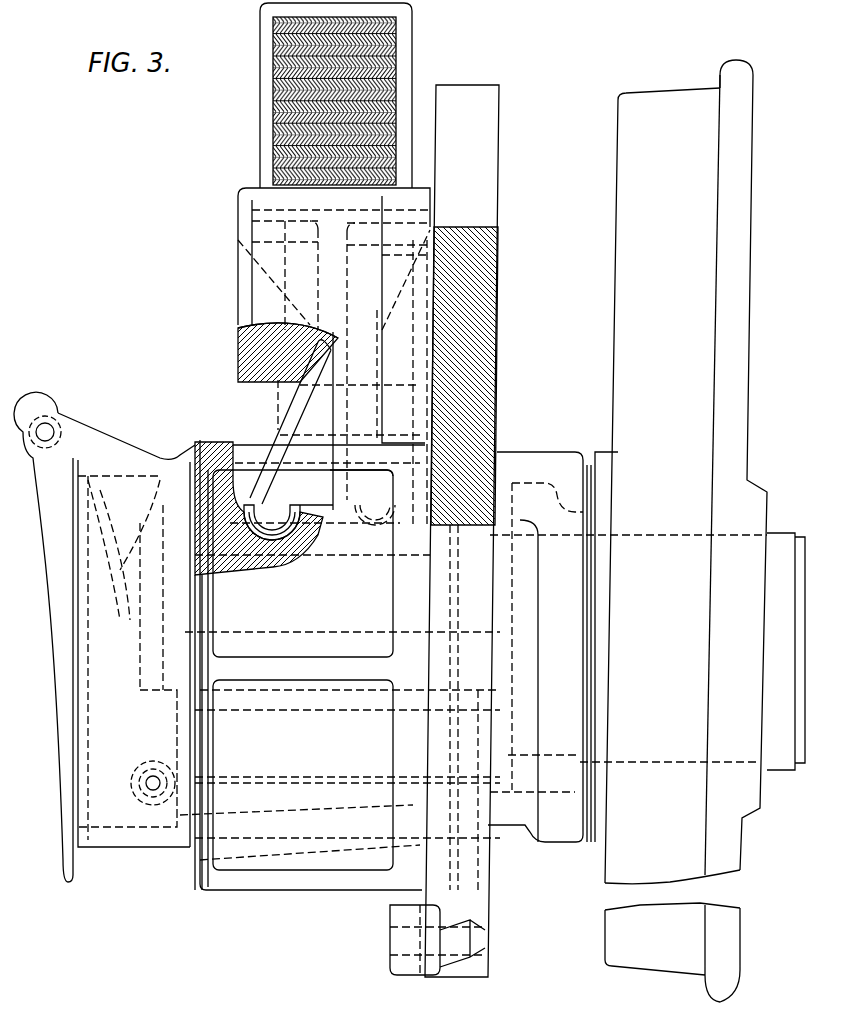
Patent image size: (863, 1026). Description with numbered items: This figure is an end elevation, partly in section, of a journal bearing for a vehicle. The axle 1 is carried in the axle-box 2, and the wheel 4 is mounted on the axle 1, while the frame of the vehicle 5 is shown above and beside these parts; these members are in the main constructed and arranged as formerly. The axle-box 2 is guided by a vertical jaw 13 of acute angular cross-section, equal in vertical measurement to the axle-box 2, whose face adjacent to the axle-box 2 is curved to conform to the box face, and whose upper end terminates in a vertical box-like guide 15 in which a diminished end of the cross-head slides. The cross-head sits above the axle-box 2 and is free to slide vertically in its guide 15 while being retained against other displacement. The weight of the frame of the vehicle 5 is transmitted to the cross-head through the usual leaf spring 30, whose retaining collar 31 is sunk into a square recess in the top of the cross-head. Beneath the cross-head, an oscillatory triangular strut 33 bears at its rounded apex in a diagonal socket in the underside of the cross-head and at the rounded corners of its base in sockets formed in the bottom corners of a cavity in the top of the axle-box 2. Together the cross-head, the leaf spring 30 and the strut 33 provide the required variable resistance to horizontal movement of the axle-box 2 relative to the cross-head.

The axle 1 is at (786, 651).
The axle-box 2 is at (173, 835).
The wheel 4 is at (686, 531).
The frame of the vehicle 5 is at (444, 531).
The vertical jaw 13 is at (204, 858).
The vertical box-like guide 15 is at (262, 318).
The leaf spring 30 is at (400, 66).
The retaining collar 31 is at (267, 75).
The oscillatory triangular strut 33 is at (297, 414).